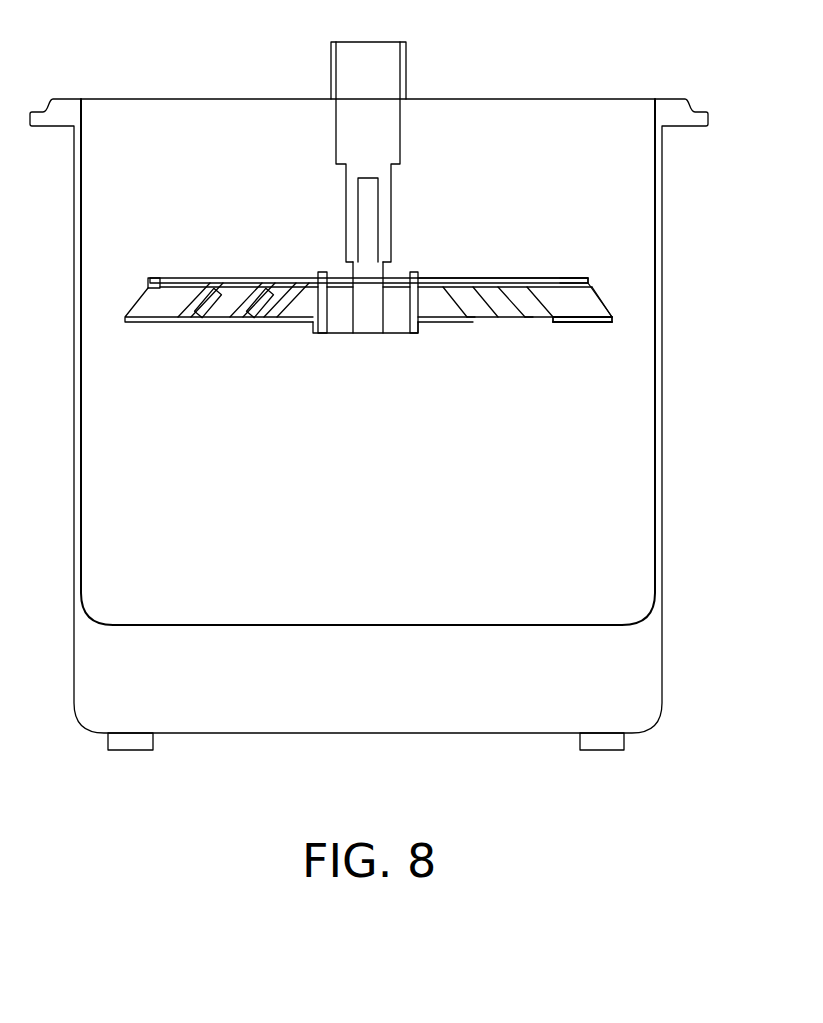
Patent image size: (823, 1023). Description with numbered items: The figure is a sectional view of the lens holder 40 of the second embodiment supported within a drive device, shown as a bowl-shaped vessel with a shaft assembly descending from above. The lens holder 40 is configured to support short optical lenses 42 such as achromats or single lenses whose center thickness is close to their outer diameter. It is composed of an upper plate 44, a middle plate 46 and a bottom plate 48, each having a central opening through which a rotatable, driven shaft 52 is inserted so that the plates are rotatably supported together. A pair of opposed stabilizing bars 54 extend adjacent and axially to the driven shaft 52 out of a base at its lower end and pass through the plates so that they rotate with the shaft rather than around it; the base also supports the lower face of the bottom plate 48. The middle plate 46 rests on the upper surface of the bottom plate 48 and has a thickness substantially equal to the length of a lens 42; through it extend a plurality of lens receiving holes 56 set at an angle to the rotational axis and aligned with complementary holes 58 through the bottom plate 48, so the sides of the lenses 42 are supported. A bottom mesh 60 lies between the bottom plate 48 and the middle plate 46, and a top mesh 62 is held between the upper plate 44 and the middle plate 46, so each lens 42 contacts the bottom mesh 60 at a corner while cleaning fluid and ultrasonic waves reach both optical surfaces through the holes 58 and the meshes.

The lens holder 40 is at (328, 376).
The optical lenses 42 is at (263, 290).
The upper plate 44 is at (556, 279).
The middle plate 46 is at (598, 297).
The bottom plate 48 is at (592, 321).
The driven shaft 52 is at (373, 268).
The stabilizing bars 54 is at (316, 303).
The lens receiving holes 56 is at (464, 298).
The complementary holes 58 is at (492, 319).
The bottom mesh 60 is at (610, 318).
The top mesh 62 is at (590, 284).